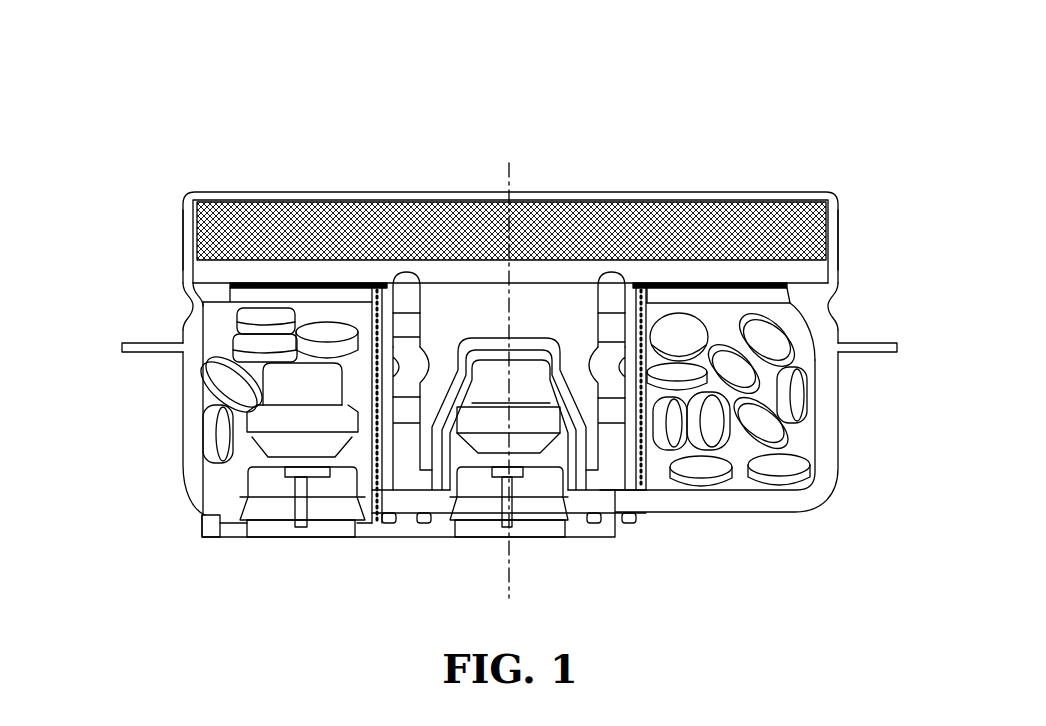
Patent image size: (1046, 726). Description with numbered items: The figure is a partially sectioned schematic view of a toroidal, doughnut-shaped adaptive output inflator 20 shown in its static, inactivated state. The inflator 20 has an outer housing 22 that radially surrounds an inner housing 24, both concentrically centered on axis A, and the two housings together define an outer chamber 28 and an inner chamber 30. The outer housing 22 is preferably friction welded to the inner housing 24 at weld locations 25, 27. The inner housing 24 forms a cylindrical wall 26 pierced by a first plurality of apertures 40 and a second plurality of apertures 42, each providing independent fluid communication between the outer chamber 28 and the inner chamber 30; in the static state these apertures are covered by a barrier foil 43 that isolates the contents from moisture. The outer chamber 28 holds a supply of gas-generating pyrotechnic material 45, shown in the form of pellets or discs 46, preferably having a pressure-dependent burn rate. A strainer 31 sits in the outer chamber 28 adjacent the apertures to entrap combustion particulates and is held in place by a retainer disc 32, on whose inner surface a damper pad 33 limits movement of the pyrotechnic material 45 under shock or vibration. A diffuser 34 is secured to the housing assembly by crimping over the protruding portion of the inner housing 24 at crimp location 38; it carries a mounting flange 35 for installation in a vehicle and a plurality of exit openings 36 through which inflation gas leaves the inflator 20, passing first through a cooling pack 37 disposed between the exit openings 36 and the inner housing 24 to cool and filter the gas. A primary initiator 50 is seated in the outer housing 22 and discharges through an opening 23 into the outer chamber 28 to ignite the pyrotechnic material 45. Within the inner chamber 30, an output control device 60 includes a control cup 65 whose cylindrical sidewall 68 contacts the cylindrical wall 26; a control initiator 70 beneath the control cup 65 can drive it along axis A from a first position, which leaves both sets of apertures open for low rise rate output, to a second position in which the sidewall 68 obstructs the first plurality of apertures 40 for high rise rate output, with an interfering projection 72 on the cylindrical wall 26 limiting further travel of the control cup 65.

The adaptive output inflator 20 is at (545, 92).
The outer housing 22 is at (805, 500).
The opening 23 is at (202, 537).
The inner housing 24 is at (810, 272).
The weld location 25 is at (397, 497).
The cylindrical wall 26 is at (421, 298).
The weld location 27 is at (196, 290).
The outer chamber 28 is at (230, 340).
The inner chamber 30 is at (647, 193).
The strainer 31 is at (643, 462).
The retainer disc 32 is at (708, 282).
The damper pad 33 is at (760, 282).
The diffuser 34 is at (222, 193).
The mounting flange 35 is at (135, 352).
The exit openings 36 is at (183, 228).
The cooling pack 37 is at (300, 230).
The crimp location 38 is at (185, 303).
The first plurality of apertures 40 is at (408, 410).
The second plurality of apertures 42 is at (417, 323).
The barrier foil 43 is at (397, 282).
The gas-generating pyrotechnic material 45 is at (217, 385).
The pellets or discs 46 is at (212, 443).
The primary initiator 50 is at (297, 418).
The output control device 60 is at (458, 550).
The control cup 65 is at (495, 340).
The cylindrical sidewall 68 is at (600, 462).
The control initiator 70 is at (530, 425).
The interfering projection 72 is at (597, 367).